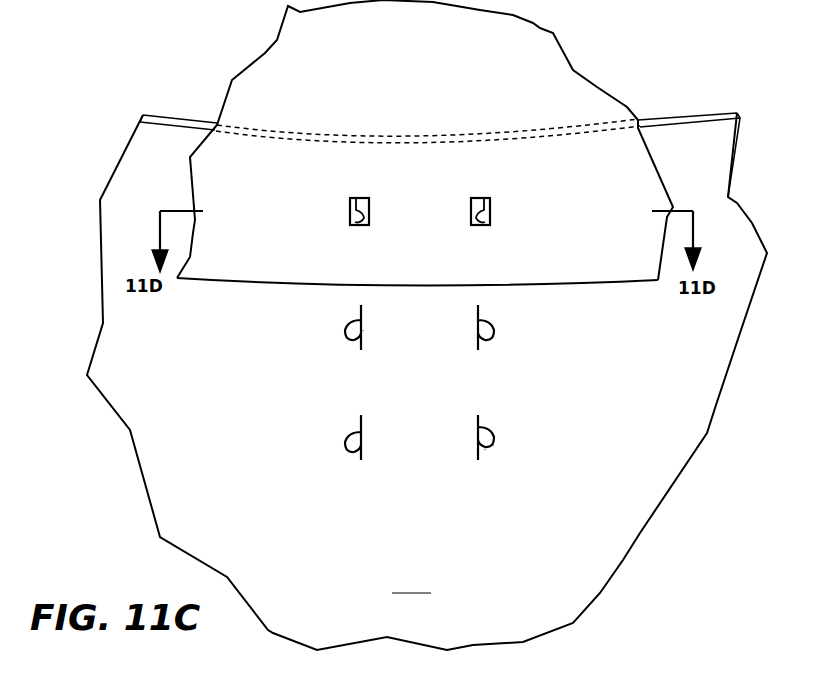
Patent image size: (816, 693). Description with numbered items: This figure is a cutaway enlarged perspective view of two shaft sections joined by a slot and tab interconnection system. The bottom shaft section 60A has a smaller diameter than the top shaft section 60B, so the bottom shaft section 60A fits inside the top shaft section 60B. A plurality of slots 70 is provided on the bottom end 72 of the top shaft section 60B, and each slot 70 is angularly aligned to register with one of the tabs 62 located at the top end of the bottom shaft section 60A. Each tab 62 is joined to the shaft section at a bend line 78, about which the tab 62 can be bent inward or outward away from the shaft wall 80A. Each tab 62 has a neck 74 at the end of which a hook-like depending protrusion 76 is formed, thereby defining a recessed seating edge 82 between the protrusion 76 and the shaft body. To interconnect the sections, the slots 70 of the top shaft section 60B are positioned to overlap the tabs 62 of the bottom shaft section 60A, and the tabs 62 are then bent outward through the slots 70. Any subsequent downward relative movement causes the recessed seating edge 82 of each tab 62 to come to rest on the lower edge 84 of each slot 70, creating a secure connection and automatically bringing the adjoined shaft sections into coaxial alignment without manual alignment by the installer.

The bottom shaft section 60A is at (638, 533).
The top shaft section 60B is at (289, 9).
The bottom end 72 is at (273, 88).
The slot 70 is at (352, 198).
The tab 62 is at (347, 216).
The lower edge 84 is at (360, 227).
The bend line 78 is at (363, 330).
The neck 74 is at (479, 426).
The protrusion 76 is at (488, 448).
The recessed seating edge 82 is at (484, 451).
The shaft wall 80A is at (411, 582).